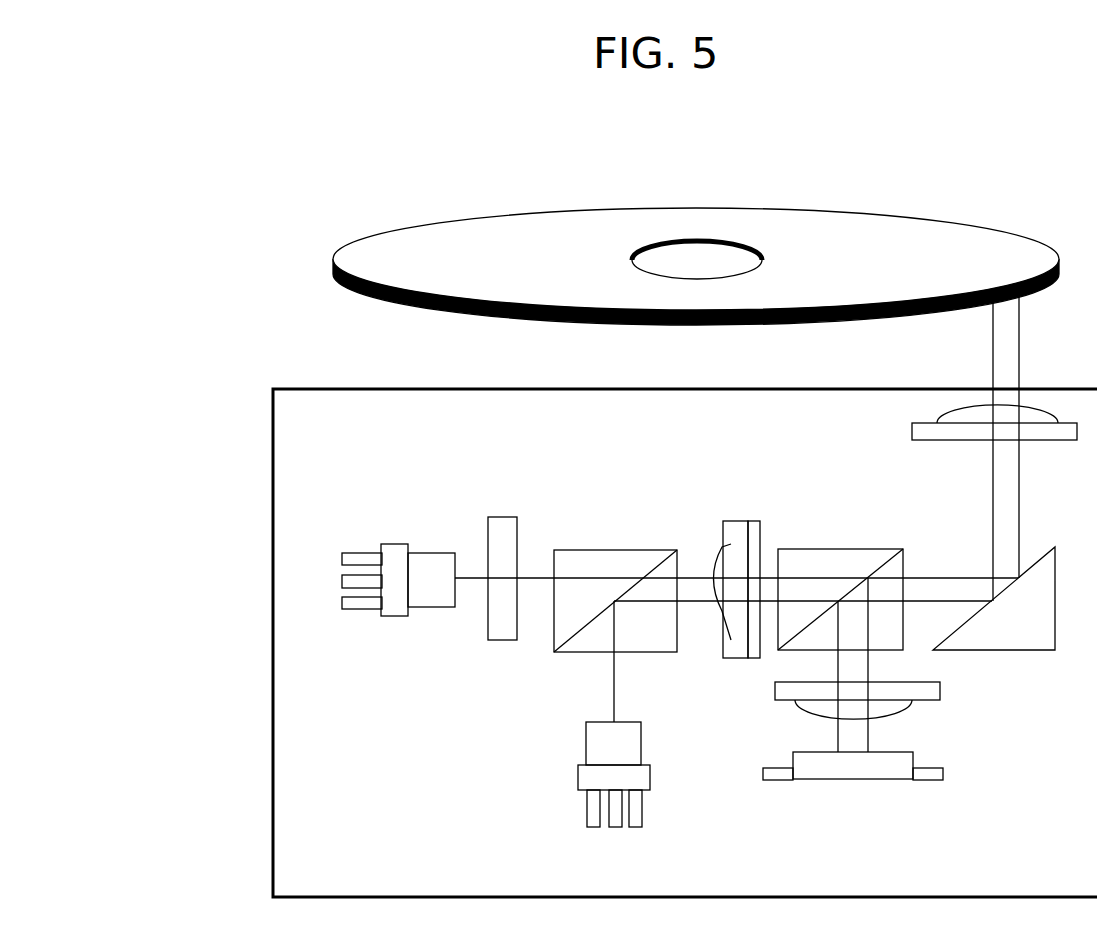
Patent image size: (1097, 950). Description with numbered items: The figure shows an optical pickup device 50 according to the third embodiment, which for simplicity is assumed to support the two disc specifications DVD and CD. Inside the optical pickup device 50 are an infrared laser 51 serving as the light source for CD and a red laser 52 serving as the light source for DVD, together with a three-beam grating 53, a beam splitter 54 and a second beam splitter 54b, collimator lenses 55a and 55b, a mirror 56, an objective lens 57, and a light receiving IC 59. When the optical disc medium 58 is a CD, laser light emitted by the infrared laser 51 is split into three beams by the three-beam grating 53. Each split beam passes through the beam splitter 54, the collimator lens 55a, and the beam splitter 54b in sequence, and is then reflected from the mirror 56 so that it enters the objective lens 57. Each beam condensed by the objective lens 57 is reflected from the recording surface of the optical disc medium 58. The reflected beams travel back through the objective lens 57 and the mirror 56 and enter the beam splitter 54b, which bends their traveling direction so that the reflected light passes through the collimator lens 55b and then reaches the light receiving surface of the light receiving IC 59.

The optical pickup device 50 is at (273, 595).
The infrared laser 51 is at (382, 612).
The red laser 52 is at (578, 765).
The 3-beam grating 53 is at (490, 640).
The beam splitter 54 is at (601, 548).
The beam splitter 54b is at (845, 548).
The collimator lens 55a is at (725, 660).
The collimator lens 55b is at (913, 705).
The mirror 56 is at (963, 652).
The objective lens 57 is at (912, 425).
The optical disc medium 58 is at (367, 240).
The light receiving IC 59 is at (832, 780).